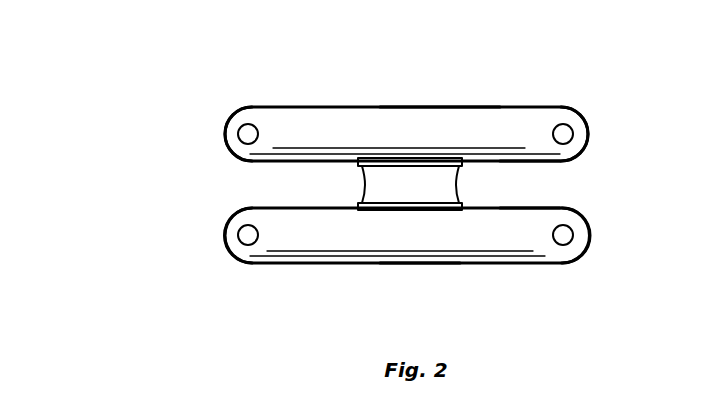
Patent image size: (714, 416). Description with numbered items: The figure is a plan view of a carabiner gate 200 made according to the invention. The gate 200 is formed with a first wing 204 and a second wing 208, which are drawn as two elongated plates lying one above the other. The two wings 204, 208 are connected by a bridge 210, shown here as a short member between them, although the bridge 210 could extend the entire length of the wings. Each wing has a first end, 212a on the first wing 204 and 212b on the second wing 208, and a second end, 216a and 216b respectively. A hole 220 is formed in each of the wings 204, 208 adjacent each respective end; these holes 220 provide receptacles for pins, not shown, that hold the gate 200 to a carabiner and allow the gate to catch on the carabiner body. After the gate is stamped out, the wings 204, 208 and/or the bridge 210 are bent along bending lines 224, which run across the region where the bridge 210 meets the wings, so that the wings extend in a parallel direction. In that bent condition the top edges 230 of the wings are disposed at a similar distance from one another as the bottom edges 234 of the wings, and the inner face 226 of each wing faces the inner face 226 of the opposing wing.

The carabiner gate 200 is at (381, 80).
The first wing 204 is at (515, 117).
The second wing 208 is at (472, 237).
The bridge 210 is at (445, 185).
The first end of the first wing 212a is at (588, 135).
The first end of the second wing 212b is at (590, 235).
The second end of the first wing 216a is at (226, 125).
The second end of the second wing 216b is at (227, 233).
The hole 220 is at (248, 134).
The bending lines 224 is at (385, 158).
The inner face 226 is at (467, 118).
The top edges 230 is at (552, 163).
The bottom edges 234 is at (440, 107).